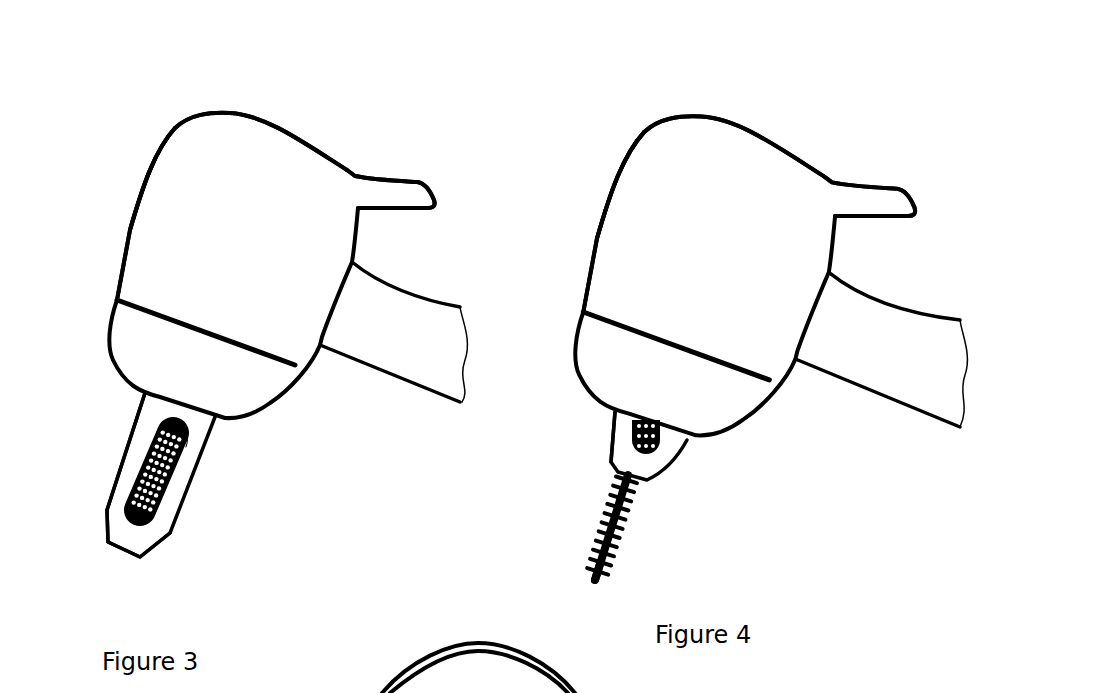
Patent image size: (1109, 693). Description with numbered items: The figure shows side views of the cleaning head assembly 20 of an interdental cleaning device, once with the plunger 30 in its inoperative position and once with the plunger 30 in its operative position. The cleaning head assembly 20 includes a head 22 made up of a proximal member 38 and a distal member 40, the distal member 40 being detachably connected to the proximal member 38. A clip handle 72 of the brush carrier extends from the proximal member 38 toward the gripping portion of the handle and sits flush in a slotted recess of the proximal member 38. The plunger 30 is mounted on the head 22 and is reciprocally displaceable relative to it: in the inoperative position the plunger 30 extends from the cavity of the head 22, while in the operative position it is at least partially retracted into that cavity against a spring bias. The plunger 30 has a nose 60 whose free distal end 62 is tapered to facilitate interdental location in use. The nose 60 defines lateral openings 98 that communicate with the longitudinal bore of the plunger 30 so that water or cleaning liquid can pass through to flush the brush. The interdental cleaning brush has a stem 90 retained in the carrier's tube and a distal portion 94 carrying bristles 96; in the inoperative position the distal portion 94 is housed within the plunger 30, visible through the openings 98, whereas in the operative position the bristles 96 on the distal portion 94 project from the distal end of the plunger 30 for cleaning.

In FIG. 3, the cleaning head assembly 20 is at (250, 86).
In FIG. 4, the cleaning head assembly 20 is at (752, 96).
In FIG. 3, the head 22 is at (155, 148).
In FIG. 4, the head 22 is at (630, 148).
In FIG. 3, the plunger 30 is at (193, 485).
In FIG. 4, the plunger 30 is at (667, 452).
In FIG. 3, the proximal member 38 is at (155, 190).
In FIG. 4, the proximal member 38 is at (595, 230).
In FIG. 3, the distal member 40 is at (127, 323).
In FIG. 4, the distal member 40 is at (762, 410).
In FIG. 3, the nose 60 is at (140, 418).
In FIG. 4, the nose 60 is at (617, 428).
In FIG. 3, the free distal end 62 is at (153, 553).
In FIG. 3, the clip handle 72 is at (390, 173).
In FIG. 4, the clip handle 72 is at (868, 185).
In FIG. 3, the stem 90 is at (162, 503).
In FIG. 4, the stem 90 is at (600, 520).
In FIG. 4, the distal portion 94 is at (635, 502).
In FIG. 4, the bristles 96 is at (588, 548).
In FIG. 3, the lateral openings 98 is at (139, 485).